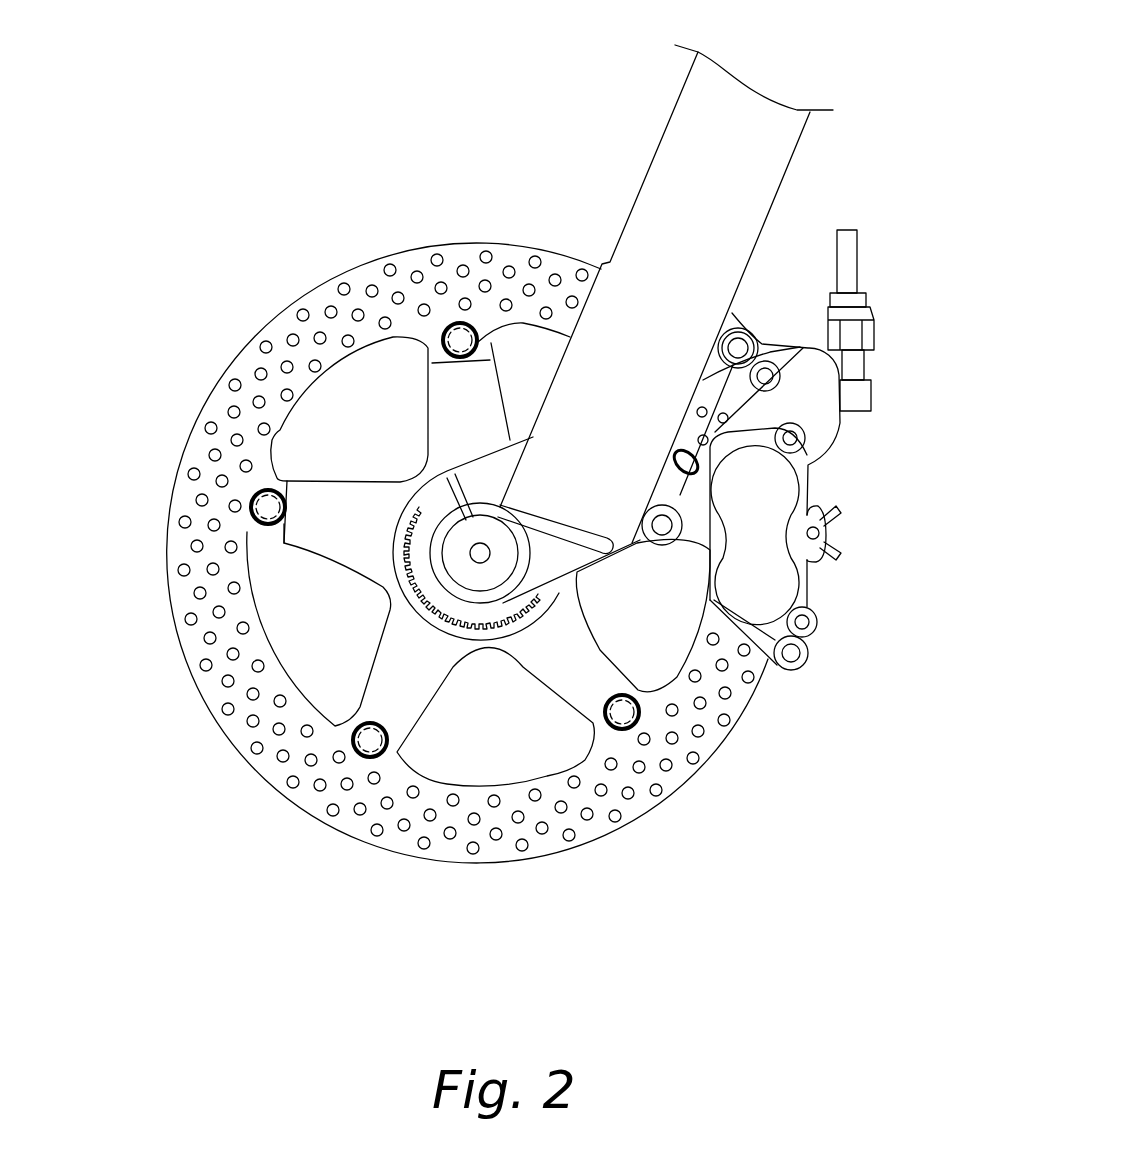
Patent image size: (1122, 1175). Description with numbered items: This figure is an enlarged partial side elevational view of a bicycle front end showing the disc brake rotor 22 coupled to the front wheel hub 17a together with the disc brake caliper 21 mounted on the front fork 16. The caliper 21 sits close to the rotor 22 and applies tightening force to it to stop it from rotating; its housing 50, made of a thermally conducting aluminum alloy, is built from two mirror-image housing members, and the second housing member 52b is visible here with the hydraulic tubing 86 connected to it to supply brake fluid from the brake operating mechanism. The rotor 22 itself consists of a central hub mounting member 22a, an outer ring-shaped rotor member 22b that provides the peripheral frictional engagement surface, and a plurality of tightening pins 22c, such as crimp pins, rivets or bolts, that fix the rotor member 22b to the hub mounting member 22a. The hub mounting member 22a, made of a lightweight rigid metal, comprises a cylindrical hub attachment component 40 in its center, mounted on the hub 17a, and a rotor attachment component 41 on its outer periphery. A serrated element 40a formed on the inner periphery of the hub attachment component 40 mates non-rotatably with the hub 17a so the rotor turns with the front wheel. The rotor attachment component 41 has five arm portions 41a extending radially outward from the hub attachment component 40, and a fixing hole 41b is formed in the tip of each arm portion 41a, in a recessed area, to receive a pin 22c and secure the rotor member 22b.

The front fork 16 is at (757, 177).
The disc brake rotor 22 is at (292, 292).
The hub mounting member 22a is at (363, 670).
The ring-shaped rotor member 22b is at (215, 688).
The tightening pin 22c is at (452, 330).
The fixing hole 41b is at (465, 333).
The hydraulic tubing 86 is at (852, 263).
The arm portion 41a is at (460, 392).
The disc brake caliper 21 is at (816, 474).
The housing 50 is at (833, 528).
The rotor attachment component 41 is at (313, 551).
The hub attachment component 40 is at (393, 560).
The second housing member 52b is at (807, 592).
The serrated element 40a is at (467, 613).
The hub 17a is at (490, 613).